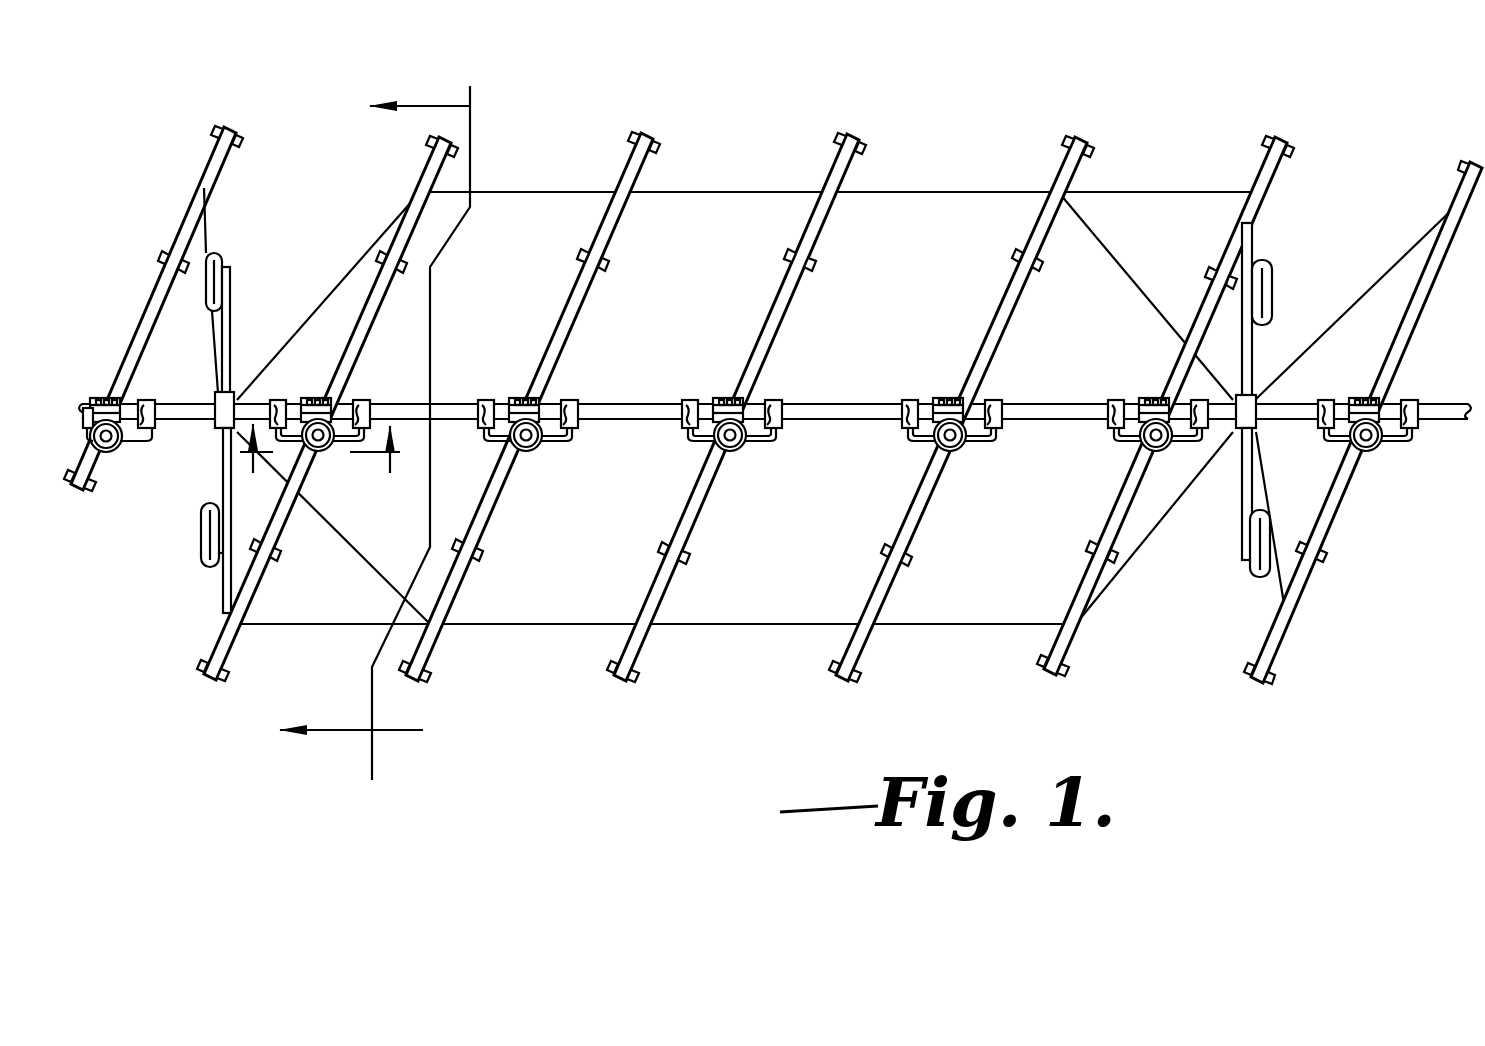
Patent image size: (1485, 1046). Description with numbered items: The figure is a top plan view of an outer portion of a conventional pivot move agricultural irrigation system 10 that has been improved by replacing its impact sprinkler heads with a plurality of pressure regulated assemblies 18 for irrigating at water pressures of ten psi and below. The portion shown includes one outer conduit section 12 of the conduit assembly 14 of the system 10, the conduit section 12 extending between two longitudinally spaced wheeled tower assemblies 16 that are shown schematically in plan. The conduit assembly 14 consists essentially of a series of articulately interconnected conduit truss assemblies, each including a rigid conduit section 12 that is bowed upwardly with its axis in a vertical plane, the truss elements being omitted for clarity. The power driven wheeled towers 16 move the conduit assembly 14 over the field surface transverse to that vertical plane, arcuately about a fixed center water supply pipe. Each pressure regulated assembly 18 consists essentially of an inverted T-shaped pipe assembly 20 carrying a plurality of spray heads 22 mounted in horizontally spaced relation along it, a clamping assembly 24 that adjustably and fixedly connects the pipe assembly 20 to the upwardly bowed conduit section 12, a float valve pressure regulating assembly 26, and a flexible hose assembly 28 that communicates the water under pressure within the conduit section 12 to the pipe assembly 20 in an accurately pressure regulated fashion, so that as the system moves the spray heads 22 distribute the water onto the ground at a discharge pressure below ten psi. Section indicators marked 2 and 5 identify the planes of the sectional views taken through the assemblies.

The pivot move agricultural irrigation system 10 is at (855, 400).
The conduit section 12 is at (600, 421).
The conduit assembly 14 is at (650, 400).
The wheeled tower assemblies 16 is at (238, 268).
The pressure regulated assembly 18 is at (530, 450).
The inverted T-shaped pipe assembly 20 is at (126, 350).
The spray heads 22 is at (435, 142).
The clamping assembly 24 is at (132, 396).
The float valve pressure regulating assembly 26 is at (111, 458).
The flexible hose assembly 28 is at (143, 440).
The section line 2- 2 is at (399, 428).
The section line 5- 5 is at (328, 466).